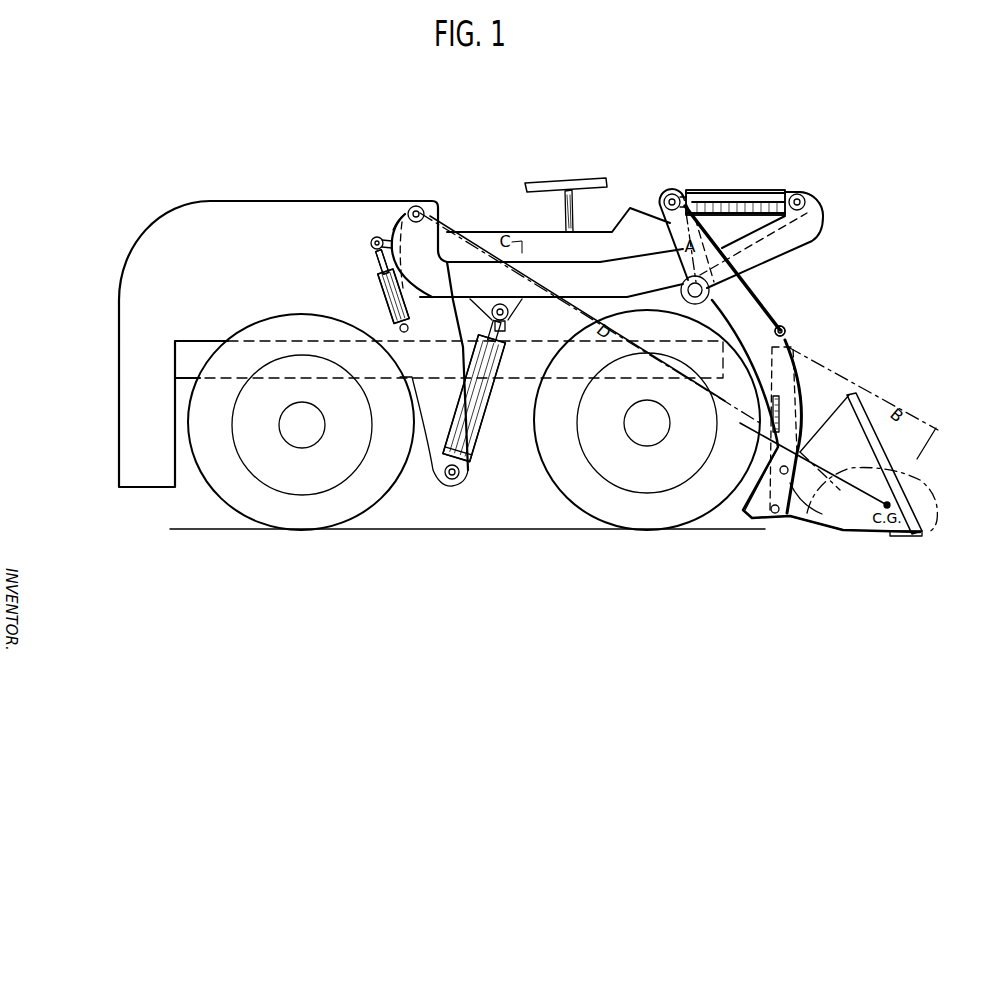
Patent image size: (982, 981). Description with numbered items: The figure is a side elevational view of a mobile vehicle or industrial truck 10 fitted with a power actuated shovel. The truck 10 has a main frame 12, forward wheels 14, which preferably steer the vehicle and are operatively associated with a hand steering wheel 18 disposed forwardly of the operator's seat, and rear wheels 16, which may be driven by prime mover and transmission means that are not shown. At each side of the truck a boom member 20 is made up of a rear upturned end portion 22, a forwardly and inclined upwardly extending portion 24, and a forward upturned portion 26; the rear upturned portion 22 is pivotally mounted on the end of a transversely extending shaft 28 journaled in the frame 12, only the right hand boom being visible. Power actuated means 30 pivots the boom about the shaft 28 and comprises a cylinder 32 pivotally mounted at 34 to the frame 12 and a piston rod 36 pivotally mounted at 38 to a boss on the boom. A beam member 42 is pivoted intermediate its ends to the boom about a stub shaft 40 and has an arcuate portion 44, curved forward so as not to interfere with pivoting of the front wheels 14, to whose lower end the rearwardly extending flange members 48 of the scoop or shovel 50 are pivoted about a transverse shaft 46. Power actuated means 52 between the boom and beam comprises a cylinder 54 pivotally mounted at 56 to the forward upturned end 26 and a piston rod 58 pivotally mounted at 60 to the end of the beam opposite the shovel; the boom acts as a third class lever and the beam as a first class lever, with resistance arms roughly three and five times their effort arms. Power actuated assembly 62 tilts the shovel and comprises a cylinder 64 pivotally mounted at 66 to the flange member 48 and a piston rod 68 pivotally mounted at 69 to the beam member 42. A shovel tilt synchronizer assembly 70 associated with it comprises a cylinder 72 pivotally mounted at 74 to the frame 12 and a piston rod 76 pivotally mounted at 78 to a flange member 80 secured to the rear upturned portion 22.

The mobile vehicle 10 is at (127, 227).
The main frame 12 is at (120, 333).
The forward wheels 14 is at (638, 515).
The rear wheels 16 is at (325, 520).
The hand steering wheel 18 is at (560, 181).
The boom member 20 is at (578, 265).
The upturned end portion 22 is at (405, 225).
The forwardly and inclined upwardly extending portion 24 is at (763, 252).
The forward upturned portion 26 is at (815, 210).
The transversely extending shaft 28 is at (419, 206).
The power actuated means 30 is at (506, 406).
The cylinder 32 is at (468, 396).
The pivotal mounting 34 is at (458, 478).
The piston rod 36 is at (512, 330).
The pivotal mounting 38 is at (496, 304).
The stub shaft 40 is at (684, 288).
The beam member 42 is at (778, 308).
The arcuate portion 44 is at (800, 412).
The transverse shaft 46 is at (773, 516).
The flange member 48 is at (793, 527).
The shovel 50 is at (872, 530).
The power actuated means 52 is at (755, 173).
The cylinder 54 is at (726, 190).
The pivotal mounting 56 is at (804, 195).
The piston rod 58 is at (682, 195).
The pivotal mounting 60 is at (666, 194).
The power actuated assembly 62 is at (796, 362).
The cylinder 64 is at (770, 414).
The pivotal mounting 66 is at (780, 470).
The piston rod 68 is at (792, 335).
The pivotal mounting 69 is at (787, 326).
The shovel tilt synchronizer assembly 70 is at (368, 283).
The cylinder 72 is at (382, 300).
The pivotal mounting 74 is at (409, 327).
The piston rod 76 is at (372, 254).
The pivotal mounting 78 is at (372, 222).
The flange member 80 is at (377, 236).